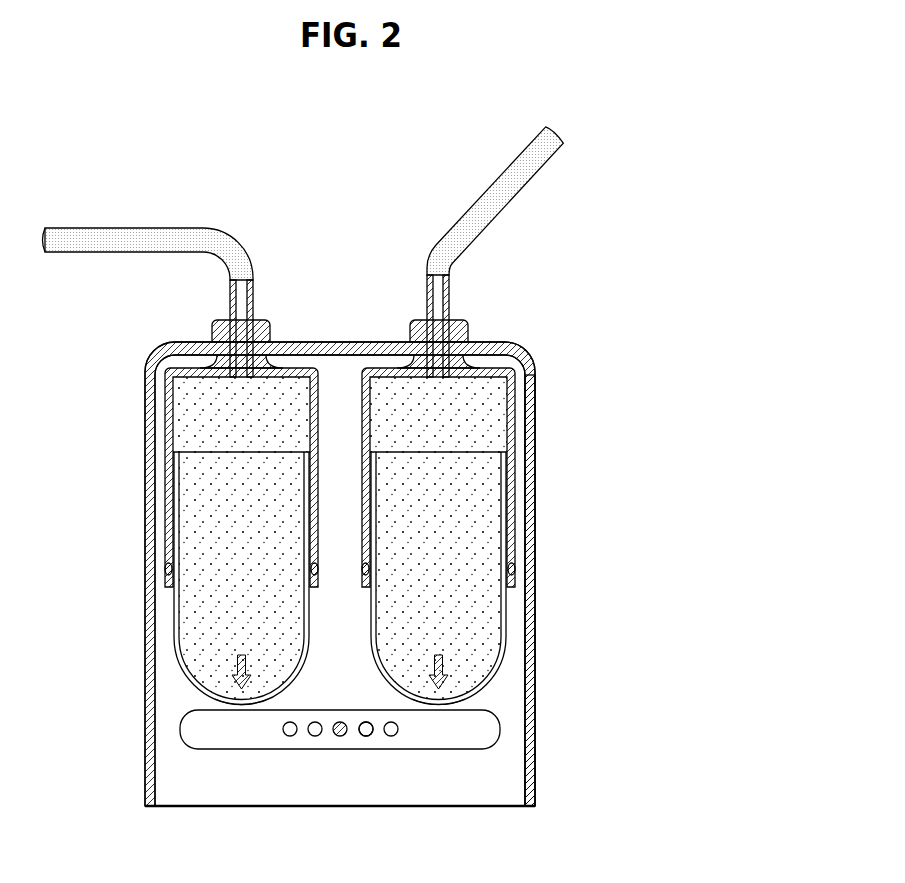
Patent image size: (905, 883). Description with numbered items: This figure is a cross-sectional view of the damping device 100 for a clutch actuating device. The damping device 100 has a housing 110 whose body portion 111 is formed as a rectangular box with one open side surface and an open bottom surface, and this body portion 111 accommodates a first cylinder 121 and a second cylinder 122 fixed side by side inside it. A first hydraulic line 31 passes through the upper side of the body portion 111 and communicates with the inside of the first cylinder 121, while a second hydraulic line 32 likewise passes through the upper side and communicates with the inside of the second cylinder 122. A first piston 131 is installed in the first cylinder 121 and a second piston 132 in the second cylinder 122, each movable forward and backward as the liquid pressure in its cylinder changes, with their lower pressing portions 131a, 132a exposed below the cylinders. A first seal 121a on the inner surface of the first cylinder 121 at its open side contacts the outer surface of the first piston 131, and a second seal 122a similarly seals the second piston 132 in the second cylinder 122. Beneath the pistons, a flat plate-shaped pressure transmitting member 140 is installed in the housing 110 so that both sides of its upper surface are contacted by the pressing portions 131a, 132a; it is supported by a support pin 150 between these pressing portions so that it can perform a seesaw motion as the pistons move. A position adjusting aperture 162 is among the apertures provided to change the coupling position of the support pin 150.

The damping device 100 is at (360, 567).
The housing 110 is at (387, 574).
The body portion 111 is at (534, 590).
The first cylinder 121 is at (512, 403).
The first seal 121a is at (515, 566).
The second cylinder 122 is at (165, 403).
The second seal 122a is at (165, 569).
The first piston 131 is at (508, 627).
The pressing portion 131a is at (438, 706).
The second piston 132 is at (174, 613).
The pressing portion 132a is at (243, 706).
The pressure transmitting member 140 is at (391, 736).
The support pin 150 is at (340, 736).
The position adjusting aperture 162 is at (366, 736).
The first hydraulic line 31 is at (510, 160).
The second hydraulic line 32 is at (115, 228).